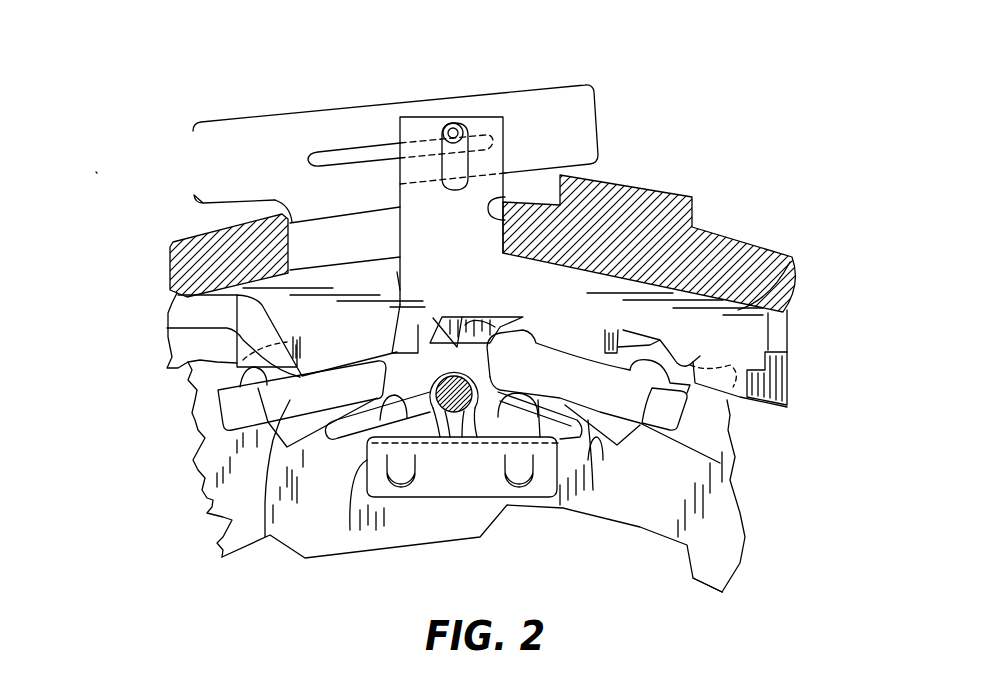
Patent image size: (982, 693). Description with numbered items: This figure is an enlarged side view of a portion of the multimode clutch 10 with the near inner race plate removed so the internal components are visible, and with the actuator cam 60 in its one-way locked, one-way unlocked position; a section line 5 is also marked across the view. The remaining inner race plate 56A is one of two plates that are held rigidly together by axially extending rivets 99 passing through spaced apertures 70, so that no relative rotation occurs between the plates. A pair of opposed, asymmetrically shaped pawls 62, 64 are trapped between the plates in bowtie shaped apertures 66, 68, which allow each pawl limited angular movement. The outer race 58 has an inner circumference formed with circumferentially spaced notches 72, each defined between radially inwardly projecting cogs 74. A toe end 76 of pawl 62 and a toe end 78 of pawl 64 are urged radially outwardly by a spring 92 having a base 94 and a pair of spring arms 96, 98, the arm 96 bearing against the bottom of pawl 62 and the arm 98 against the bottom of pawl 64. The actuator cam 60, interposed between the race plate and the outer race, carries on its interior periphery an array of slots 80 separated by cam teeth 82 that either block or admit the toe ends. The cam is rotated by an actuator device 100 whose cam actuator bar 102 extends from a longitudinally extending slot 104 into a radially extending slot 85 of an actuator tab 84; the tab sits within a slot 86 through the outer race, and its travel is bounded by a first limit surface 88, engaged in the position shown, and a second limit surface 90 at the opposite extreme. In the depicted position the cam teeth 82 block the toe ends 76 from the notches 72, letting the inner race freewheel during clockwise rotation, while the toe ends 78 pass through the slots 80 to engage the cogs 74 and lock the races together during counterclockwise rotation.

The section line 5- 5 is at (400, 140).
The multimode clutch 10 is at (90, 152).
The inner race plate 56A is at (720, 563).
The outer race 58 is at (742, 250).
The actuator cam 60 is at (603, 368).
The pawl 62 is at (218, 410).
The pawl 64 is at (672, 408).
The bowtie shaped aperture 66 is at (267, 540).
The bowtie shaped aperture 68 is at (720, 463).
The spaced aperture 70 is at (451, 412).
The notch 72 is at (178, 295).
The cog 74 is at (167, 328).
The toe end 76 is at (397, 272).
The toe end 78 is at (500, 338).
The slot 80 is at (350, 323).
The cam tooth 82 is at (418, 325).
The actuator tab 84 is at (410, 122).
The radially extending slot 85 is at (453, 128).
The slot 86 is at (285, 252).
The first limit surface 88 is at (495, 208).
The second limit surface 90 is at (280, 197).
The spring 92 is at (590, 470).
The base 94 is at (350, 530).
The spring arm 96 is at (305, 558).
The spring arm 98 is at (538, 400).
The rivet 99 is at (478, 410).
The actuator device 100 is at (197, 125).
The cam actuator bar 102 is at (465, 123).
The longitudinally extending slot 104 is at (392, 142).